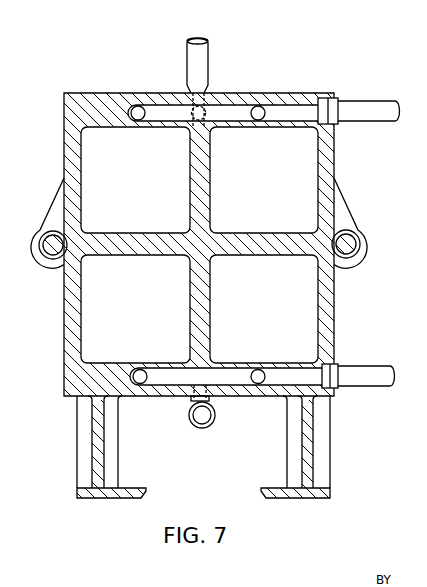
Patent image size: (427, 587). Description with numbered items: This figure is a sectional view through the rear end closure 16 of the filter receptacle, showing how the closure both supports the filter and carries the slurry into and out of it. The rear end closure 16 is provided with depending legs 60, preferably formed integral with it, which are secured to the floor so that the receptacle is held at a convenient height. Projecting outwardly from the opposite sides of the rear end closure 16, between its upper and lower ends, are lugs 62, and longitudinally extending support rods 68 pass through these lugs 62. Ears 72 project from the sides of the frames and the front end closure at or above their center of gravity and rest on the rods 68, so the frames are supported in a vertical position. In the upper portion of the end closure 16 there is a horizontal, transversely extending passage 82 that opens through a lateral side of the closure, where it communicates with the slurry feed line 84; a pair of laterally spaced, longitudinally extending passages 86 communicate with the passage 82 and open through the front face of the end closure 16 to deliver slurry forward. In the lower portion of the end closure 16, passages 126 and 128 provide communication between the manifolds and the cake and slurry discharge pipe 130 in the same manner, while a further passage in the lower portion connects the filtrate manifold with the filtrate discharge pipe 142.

The rear end closure 16 is at (253, 92).
The legs 60 is at (93, 453).
The lugs 62 is at (38, 244).
The support rods 68 is at (50, 256).
The ears 72 is at (53, 200).
The passage 82 is at (160, 109).
The slurry feed line 84 is at (364, 98).
The passages 86 is at (134, 108).
The passage 126 is at (168, 378).
The passages 128 is at (140, 370).
The cake and slurry discharge pipe 130 is at (368, 390).
The filtrate discharge pipe 142 is at (198, 428).